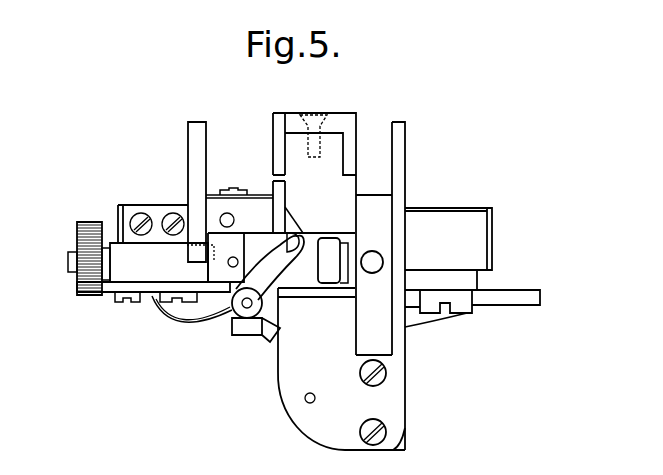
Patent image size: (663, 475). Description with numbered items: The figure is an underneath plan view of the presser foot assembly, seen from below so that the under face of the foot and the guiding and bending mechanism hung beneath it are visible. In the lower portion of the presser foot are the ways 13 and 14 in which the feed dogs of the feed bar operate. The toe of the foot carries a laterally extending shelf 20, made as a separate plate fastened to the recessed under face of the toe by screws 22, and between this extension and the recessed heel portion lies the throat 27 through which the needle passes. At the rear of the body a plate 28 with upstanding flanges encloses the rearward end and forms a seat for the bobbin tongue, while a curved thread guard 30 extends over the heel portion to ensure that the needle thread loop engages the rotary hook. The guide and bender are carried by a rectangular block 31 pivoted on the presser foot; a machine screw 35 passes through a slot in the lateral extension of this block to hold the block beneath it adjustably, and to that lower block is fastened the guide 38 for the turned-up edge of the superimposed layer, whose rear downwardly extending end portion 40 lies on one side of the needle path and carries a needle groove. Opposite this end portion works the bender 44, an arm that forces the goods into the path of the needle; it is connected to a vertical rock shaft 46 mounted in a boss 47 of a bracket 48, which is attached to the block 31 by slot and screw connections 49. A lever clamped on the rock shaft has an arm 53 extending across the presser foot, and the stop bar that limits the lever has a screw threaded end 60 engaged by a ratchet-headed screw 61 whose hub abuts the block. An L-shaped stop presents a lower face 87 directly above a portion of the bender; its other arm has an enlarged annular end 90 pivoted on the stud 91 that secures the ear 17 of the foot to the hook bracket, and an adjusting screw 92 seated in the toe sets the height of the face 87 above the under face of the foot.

The way 13 is at (382, 210).
The way 14 is at (212, 208).
The ear 17 is at (482, 225).
The shelf 20 is at (318, 347).
The screws 22 is at (384, 428).
The throat 27 is at (315, 237).
The plate 28 is at (348, 122).
The thread guard 30 is at (258, 194).
The rectangular block 31 is at (115, 252).
The machine screw 35 is at (234, 257).
The guide 38 is at (278, 234).
The end portion 40 is at (311, 234).
The bender 44 is at (275, 257).
The rock shaft 46 is at (240, 308).
The boss 47 is at (243, 327).
The bracket 48 is at (112, 288).
The slot and screw connections 49 is at (175, 303).
The arm 53 is at (535, 298).
The screw threaded end 60 is at (70, 252).
The screw 61 is at (78, 222).
The lower face 87 is at (332, 283).
The annular end 90 is at (472, 281).
The stud 91 is at (466, 308).
The adjusting screw 92 is at (379, 256).